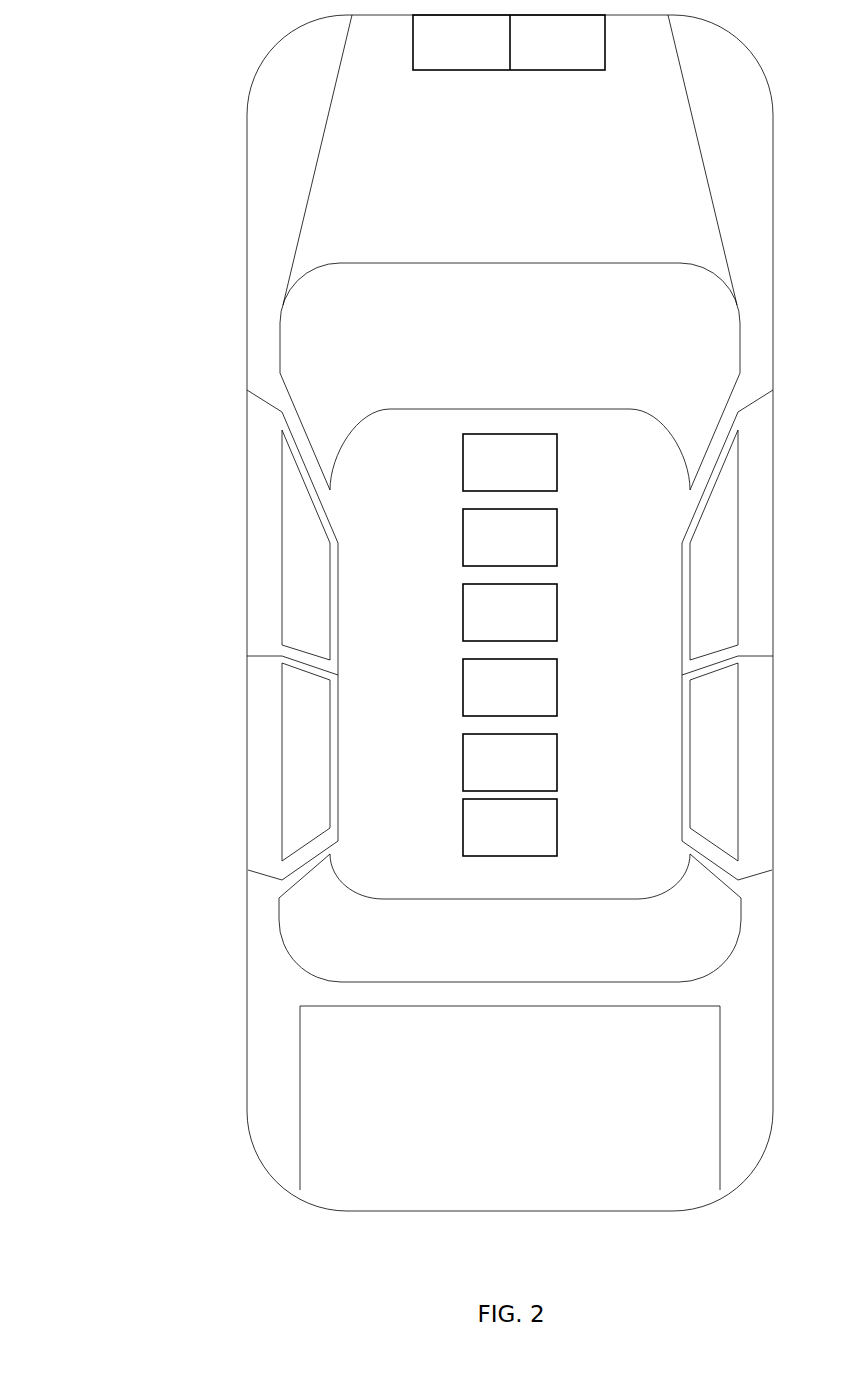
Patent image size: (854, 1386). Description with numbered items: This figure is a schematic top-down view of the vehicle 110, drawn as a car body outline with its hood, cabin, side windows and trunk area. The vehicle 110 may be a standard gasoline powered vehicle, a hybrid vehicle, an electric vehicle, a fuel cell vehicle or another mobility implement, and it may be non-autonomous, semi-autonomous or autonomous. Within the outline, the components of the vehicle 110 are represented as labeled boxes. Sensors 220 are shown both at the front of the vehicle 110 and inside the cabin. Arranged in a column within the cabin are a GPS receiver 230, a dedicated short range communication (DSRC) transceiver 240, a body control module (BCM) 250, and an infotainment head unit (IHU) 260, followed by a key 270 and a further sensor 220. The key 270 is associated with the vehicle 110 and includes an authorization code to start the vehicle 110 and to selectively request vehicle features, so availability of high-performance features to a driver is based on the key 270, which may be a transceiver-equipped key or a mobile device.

The vehicle 110 is at (156, 64).
The sensors 220 is at (443, 53).
The GPS receiver 230 is at (491, 488).
The dedicated short range communication (DSRC) transceiver 240 is at (491, 563).
The body control module (BCM) 250 is at (491, 638).
The infotainment head unit (IHU) 260 is at (491, 713).
The key 270 is at (491, 788).